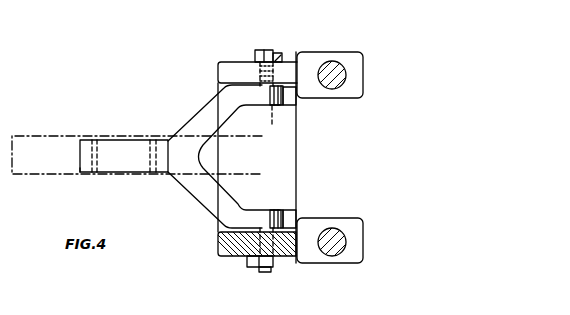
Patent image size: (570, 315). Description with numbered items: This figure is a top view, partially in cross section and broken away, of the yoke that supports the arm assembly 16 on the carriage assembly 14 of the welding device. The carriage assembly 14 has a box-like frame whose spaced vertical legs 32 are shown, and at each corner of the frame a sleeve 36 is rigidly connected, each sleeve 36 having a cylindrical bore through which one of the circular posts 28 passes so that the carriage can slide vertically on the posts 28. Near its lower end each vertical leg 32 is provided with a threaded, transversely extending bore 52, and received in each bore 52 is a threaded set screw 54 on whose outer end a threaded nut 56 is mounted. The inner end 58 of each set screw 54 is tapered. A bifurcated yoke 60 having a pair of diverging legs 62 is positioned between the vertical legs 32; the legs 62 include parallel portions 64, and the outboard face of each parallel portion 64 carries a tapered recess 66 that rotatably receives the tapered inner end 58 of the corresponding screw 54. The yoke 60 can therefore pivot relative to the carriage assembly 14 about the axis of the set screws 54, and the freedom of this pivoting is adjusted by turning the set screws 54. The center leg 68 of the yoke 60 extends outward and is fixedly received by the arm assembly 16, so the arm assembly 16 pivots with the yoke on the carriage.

The carriage assembly 14 is at (209, 234).
The arm assembly 16 is at (49, 132).
The circular posts 28 is at (340, 86).
The vertical legs 32 is at (221, 60).
The sleeve 36 is at (342, 52).
The threaded bore 52 is at (258, 71).
The set screw 54 is at (267, 50).
The threaded nut 56 is at (278, 54).
The inner end 58 is at (268, 96).
The bifurcated yoke 60 is at (127, 180).
The diverging legs 62 is at (209, 100).
The parallel portions 64 is at (284, 106).
The tapered recess 66 is at (278, 126).
The center leg 68 is at (78, 165).